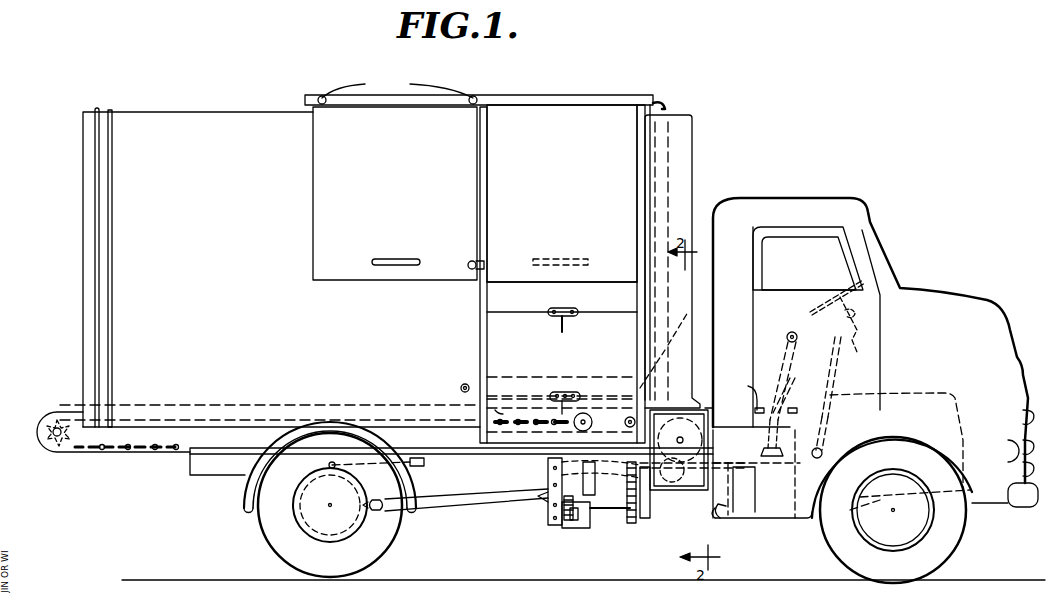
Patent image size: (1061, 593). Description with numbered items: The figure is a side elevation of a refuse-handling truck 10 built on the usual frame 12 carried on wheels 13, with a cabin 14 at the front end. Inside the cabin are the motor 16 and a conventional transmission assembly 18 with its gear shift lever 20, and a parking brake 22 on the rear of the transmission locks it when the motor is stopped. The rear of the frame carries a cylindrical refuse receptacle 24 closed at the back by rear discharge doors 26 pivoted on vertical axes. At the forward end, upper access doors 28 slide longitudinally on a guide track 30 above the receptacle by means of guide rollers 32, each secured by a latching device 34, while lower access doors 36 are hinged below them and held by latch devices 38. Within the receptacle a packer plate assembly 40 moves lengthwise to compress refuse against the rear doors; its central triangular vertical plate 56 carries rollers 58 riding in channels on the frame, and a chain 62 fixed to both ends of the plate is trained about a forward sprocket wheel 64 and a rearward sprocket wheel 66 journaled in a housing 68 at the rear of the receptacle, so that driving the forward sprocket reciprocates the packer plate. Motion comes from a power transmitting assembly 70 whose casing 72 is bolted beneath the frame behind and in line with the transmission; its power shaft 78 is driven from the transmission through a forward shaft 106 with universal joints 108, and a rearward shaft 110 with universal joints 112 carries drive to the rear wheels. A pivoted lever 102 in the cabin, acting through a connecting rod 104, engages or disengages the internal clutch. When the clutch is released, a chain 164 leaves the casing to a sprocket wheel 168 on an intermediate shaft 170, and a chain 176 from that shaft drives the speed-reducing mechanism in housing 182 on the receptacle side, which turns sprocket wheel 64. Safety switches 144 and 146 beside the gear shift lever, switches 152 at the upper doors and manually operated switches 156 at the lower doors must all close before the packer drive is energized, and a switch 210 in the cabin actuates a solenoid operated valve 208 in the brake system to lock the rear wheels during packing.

The truck 10 is at (761, 162).
The frame 12 is at (203, 470).
The wheels 13 is at (375, 547).
The cabin 14 is at (955, 305).
The motor 16 is at (920, 400).
The transmission assembly 18 is at (795, 512).
The gear shift lever 20 is at (790, 332).
The parking brake 22 is at (716, 518).
The refuse receptacle 24 is at (225, 112).
The rear discharge doors 26 is at (83, 302).
The upper access doors 28 is at (313, 198).
The guide track 30 is at (548, 100).
The guide rollers 32 is at (397, 89).
The latching device 34 is at (470, 262).
The lower access doors 36 is at (500, 347).
The latch devices 38 is at (567, 316).
The packer plate assembly 40 is at (681, 158).
The vertical plate 56 is at (640, 388).
The rollers 58 is at (592, 422).
The chain 62 is at (497, 413).
The forward sprocket wheel 64 is at (708, 412).
The rearward sprocket wheel 66 is at (40, 435).
The housing 68 is at (68, 412).
The power transmitting assembly 70 is at (588, 508).
The casing 72 is at (583, 528).
The power shaft 78 is at (548, 505).
The pivoted lever 102 is at (835, 382).
The connecting rod 104 is at (747, 462).
The forward shaft 106 is at (650, 507).
The universal joints 108 is at (548, 468).
The rearward shaft 110 is at (440, 500).
The universal joints 112 is at (385, 510).
The switch 144 is at (748, 386).
The switch 146 is at (790, 405).
The switches 152 is at (663, 105).
The switches 156 is at (465, 384).
The chain 164 is at (568, 528).
The sprocket wheel 168 is at (552, 525).
The intermediate shaft 170 is at (610, 512).
The chain 176 is at (635, 520).
The housing 182 is at (700, 395).
The solenoid operated valve 208 is at (425, 465).
The switch 210 is at (870, 314).